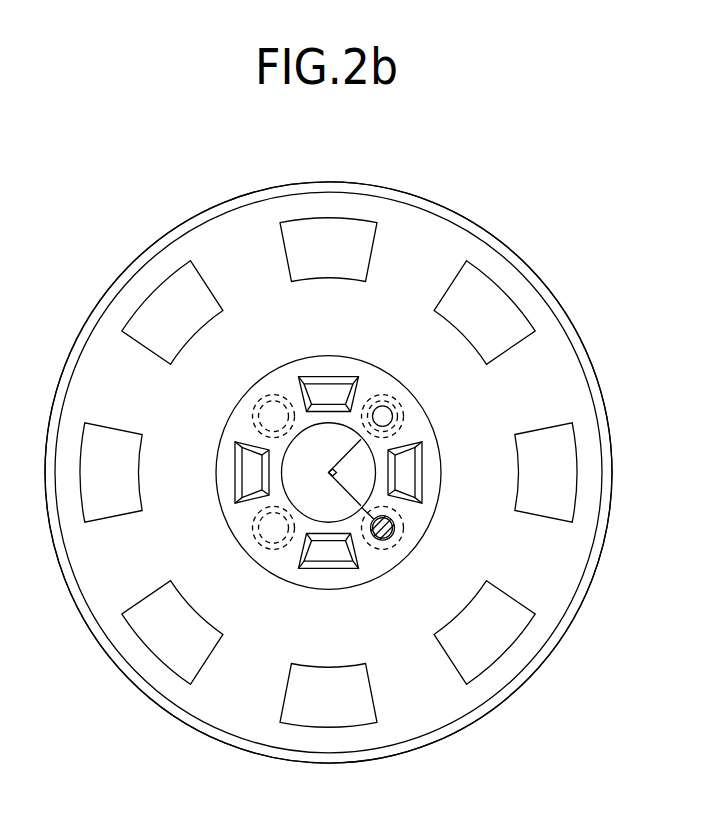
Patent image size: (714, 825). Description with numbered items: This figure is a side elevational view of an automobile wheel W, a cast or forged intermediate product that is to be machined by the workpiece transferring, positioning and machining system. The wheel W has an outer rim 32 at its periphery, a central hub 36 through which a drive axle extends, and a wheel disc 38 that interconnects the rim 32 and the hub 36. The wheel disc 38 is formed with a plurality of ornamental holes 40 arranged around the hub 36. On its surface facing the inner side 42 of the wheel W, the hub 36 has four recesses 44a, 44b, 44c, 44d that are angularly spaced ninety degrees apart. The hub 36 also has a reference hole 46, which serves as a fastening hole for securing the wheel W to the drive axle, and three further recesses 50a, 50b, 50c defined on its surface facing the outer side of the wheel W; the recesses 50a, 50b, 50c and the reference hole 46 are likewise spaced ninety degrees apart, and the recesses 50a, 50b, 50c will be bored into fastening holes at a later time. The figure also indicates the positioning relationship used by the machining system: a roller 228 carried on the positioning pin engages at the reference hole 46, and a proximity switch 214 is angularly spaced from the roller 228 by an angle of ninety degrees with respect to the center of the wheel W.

The wheel W is at (207, 192).
The outer rim 32 is at (453, 217).
The hub 36 is at (383, 562).
The wheel disc 38 is at (557, 552).
The ornamental holes 40 is at (483, 290).
The inner side 42 is at (118, 581).
The recess 44a is at (408, 470).
The recess 44b is at (325, 393).
The recess 44c is at (250, 472).
The recess 44d is at (333, 557).
The reference hole 46 is at (396, 536).
The recess 50a is at (388, 395).
The recess 50b is at (255, 405).
The recess 50c is at (272, 553).
The proximity switch 214 is at (362, 440).
The roller 228 is at (395, 519).